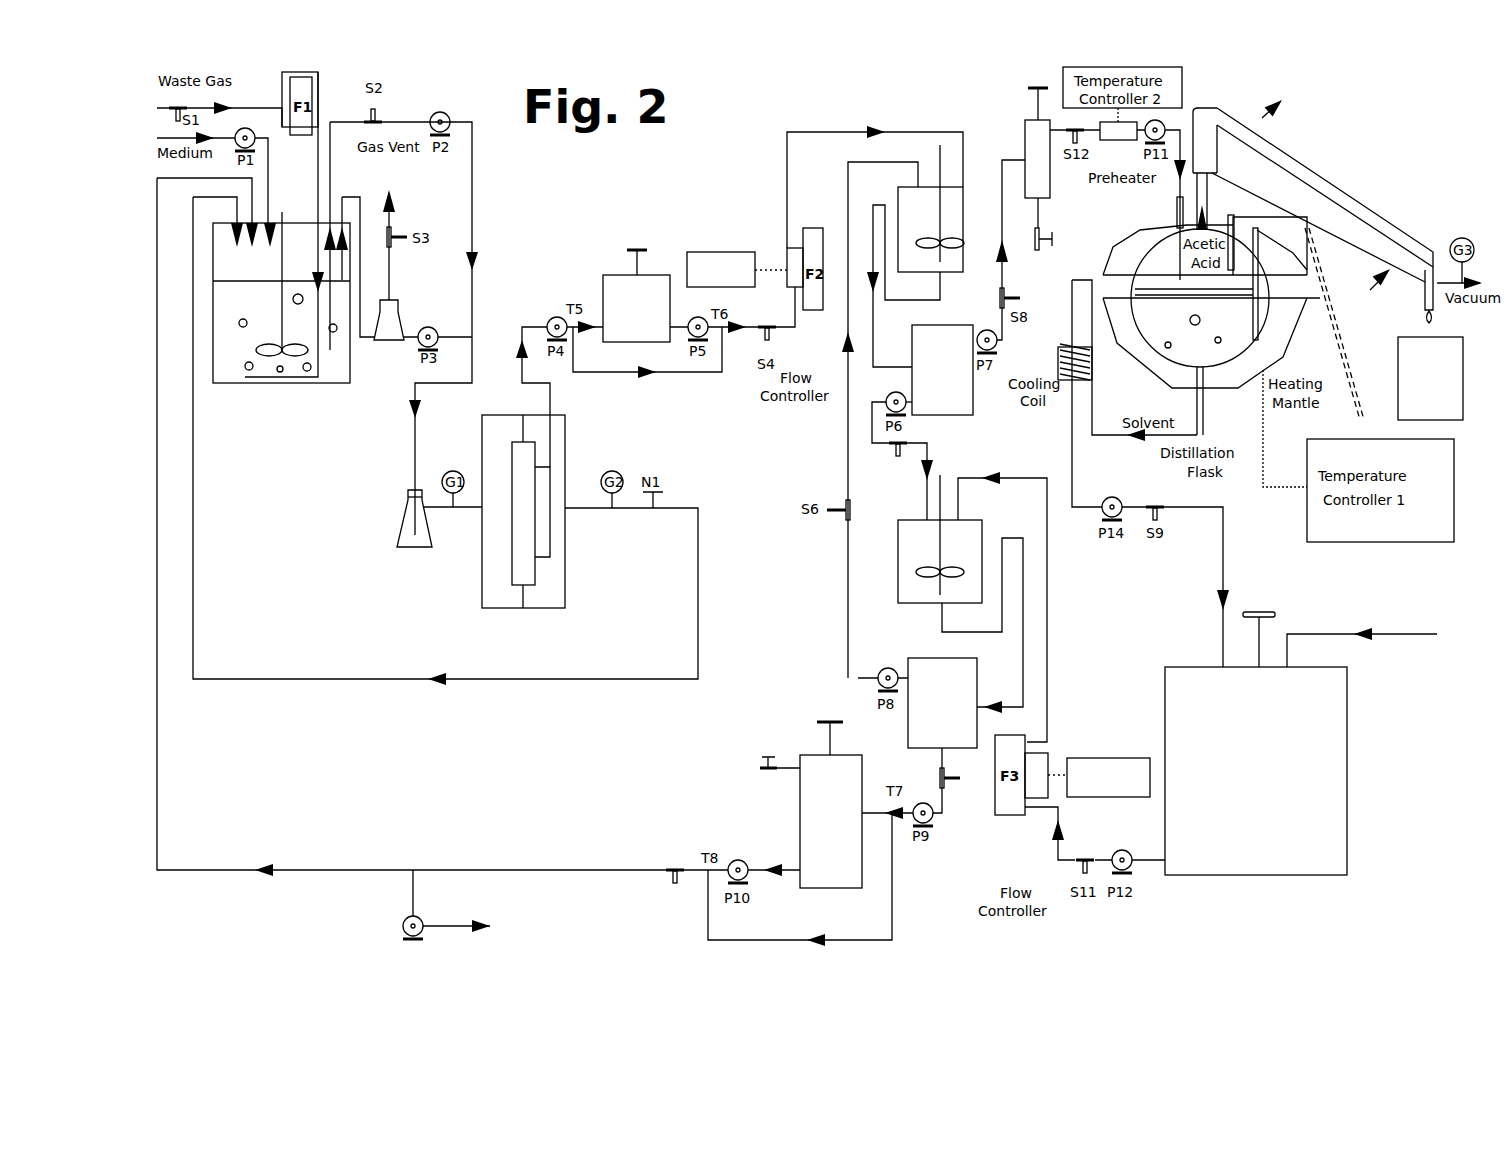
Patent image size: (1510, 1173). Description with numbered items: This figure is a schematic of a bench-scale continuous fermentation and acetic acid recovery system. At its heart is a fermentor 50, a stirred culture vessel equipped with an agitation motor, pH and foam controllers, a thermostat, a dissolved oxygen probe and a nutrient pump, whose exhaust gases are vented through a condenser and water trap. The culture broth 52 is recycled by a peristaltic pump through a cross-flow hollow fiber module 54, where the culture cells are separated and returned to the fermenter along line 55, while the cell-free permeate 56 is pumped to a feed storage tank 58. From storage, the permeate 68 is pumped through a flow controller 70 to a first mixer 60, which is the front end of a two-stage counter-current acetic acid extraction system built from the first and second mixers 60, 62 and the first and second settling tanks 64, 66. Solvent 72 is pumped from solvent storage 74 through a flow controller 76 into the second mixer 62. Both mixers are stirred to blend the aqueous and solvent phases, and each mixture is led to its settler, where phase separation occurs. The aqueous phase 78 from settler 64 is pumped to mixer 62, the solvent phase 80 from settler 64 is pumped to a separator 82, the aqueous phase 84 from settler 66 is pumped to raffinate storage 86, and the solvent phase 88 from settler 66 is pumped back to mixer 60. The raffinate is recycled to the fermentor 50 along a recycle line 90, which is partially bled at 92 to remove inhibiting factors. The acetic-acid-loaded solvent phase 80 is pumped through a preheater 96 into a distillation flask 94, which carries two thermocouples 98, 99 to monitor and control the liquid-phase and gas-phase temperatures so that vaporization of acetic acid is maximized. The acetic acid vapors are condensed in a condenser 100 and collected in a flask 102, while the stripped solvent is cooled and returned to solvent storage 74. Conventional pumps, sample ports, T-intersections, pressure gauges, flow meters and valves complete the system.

The fermentor 50 is at (232, 363).
The culture broth 52 is at (415, 462).
The cross-flow hollow fiber module 54 is at (565, 568).
The line 55 is at (370, 680).
The permeate 56 is at (520, 342).
The storage tank 58 is at (616, 280).
The first mixer 60 is at (957, 258).
The second mixer 62 is at (912, 563).
The first settling tank 64 is at (928, 403).
The second settling tank 66 is at (925, 668).
The permeate 68 is at (785, 163).
The flow controller 70 is at (717, 262).
The solvent 72 is at (1047, 595).
The solvent storage 74 is at (1330, 748).
The flow controller 76 is at (1090, 757).
The aqueous phase 78 is at (887, 447).
The solvent phase 80 is at (1003, 178).
The separator 82 is at (1040, 178).
The aqueous phase 84 is at (945, 798).
The raffinate storage 86 is at (810, 832).
The solvent phase 88 is at (843, 602).
The recycle line 90 is at (387, 868).
The bleed 92 is at (487, 923).
The distillation flask 94 is at (1170, 250).
The preheater 96 is at (1158, 123).
The thermocouple 98 is at (1230, 215).
The thermocouple 99 is at (1262, 292).
The condenser 100 is at (1307, 152).
The flask 102 is at (1440, 408).